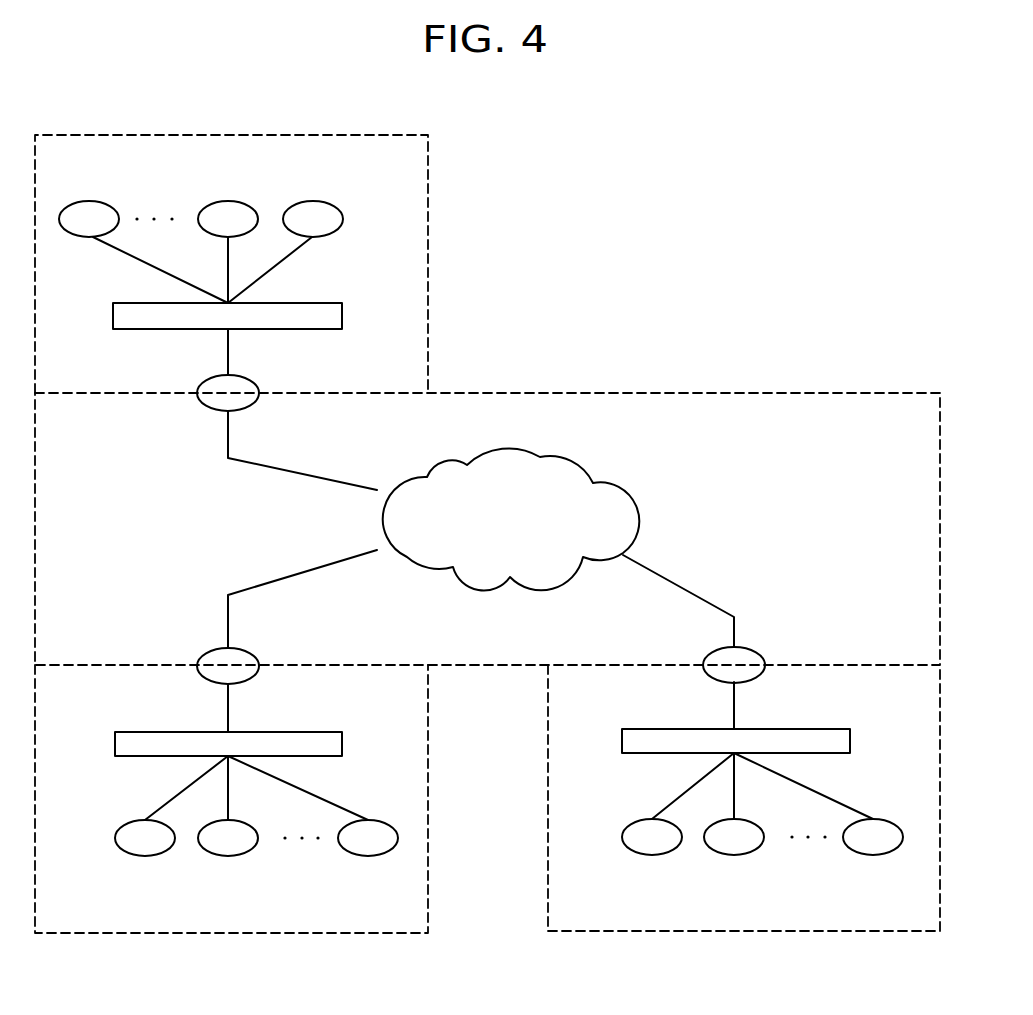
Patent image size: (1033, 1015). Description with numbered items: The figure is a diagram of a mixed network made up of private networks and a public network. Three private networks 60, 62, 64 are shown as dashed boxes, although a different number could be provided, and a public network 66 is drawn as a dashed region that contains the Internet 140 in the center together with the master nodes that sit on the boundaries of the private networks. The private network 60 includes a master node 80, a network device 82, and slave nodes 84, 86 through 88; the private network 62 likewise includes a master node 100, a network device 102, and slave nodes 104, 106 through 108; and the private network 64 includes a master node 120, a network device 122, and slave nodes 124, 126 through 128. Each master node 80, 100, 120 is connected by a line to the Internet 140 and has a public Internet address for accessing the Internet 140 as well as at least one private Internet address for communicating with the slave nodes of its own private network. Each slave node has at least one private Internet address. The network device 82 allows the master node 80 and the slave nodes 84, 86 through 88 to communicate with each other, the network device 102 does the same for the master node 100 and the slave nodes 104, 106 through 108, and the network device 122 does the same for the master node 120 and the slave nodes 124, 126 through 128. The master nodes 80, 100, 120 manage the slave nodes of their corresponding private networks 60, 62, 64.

The private network 60 is at (428, 231).
The private network 62 is at (380, 933).
The private network 64 is at (700, 931).
The public network 66 is at (710, 392).
The master node 80 is at (250, 405).
The network device 82 is at (342, 315).
The slave node 84 is at (317, 202).
The slave node 86 is at (229, 201).
The slave node 88 is at (90, 201).
The master node 100 is at (252, 648).
The network device 102 is at (342, 743).
The slave node 104 is at (143, 857).
The slave node 106 is at (228, 857).
The slave node 108 is at (368, 857).
The master node 120 is at (760, 648).
The network device 122 is at (850, 740).
The slave node 124 is at (652, 855).
The slave node 126 is at (734, 855).
The slave node 128 is at (873, 855).
The Internet 140 is at (622, 492).